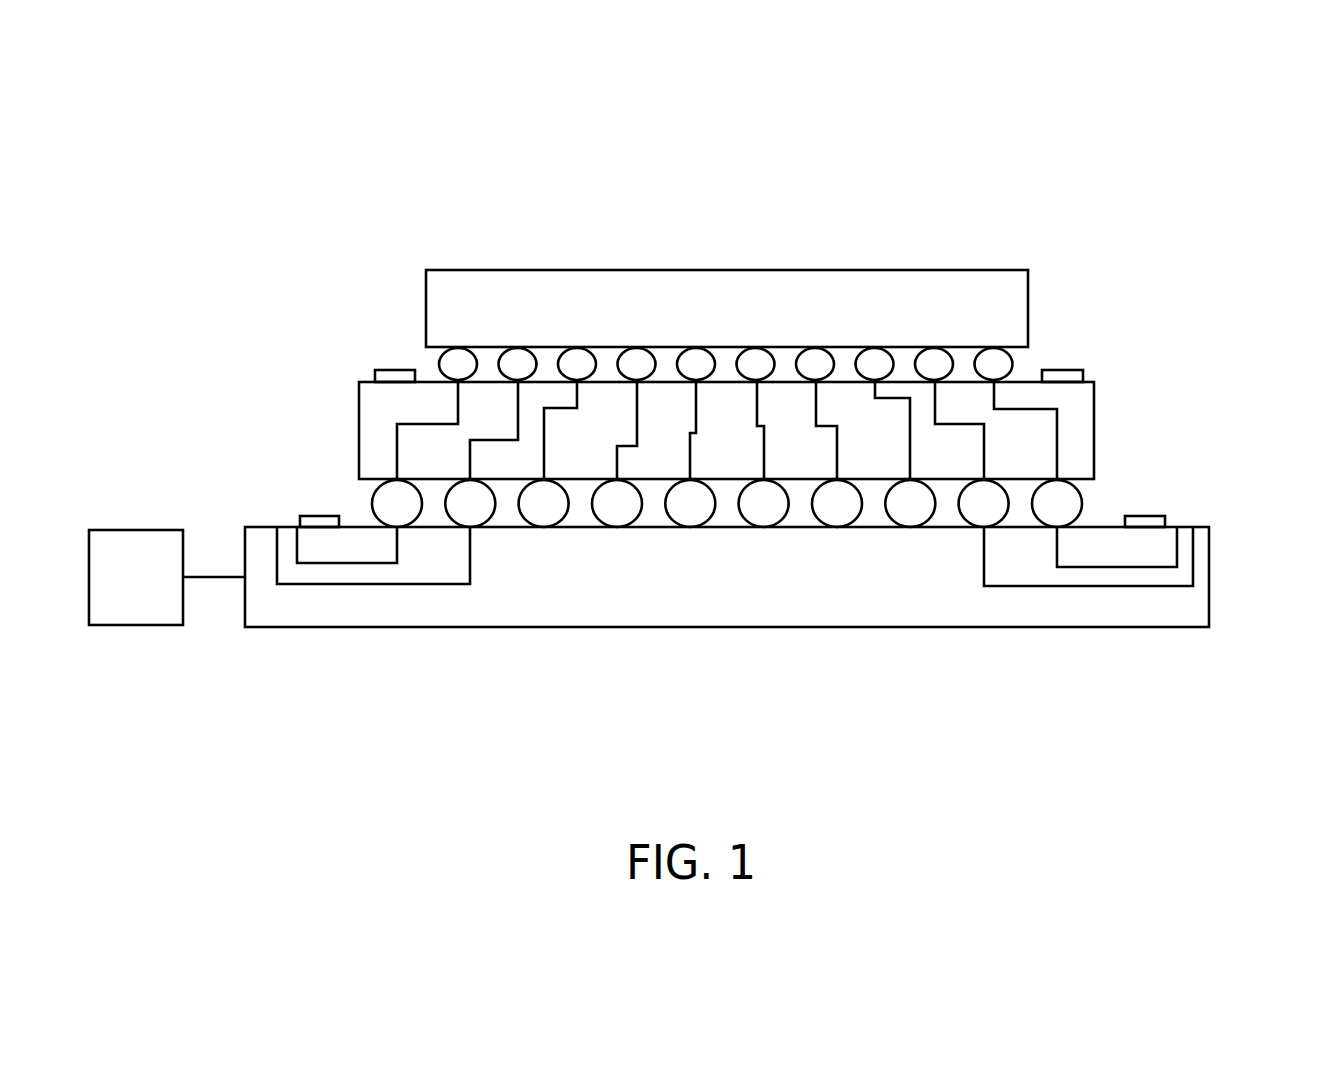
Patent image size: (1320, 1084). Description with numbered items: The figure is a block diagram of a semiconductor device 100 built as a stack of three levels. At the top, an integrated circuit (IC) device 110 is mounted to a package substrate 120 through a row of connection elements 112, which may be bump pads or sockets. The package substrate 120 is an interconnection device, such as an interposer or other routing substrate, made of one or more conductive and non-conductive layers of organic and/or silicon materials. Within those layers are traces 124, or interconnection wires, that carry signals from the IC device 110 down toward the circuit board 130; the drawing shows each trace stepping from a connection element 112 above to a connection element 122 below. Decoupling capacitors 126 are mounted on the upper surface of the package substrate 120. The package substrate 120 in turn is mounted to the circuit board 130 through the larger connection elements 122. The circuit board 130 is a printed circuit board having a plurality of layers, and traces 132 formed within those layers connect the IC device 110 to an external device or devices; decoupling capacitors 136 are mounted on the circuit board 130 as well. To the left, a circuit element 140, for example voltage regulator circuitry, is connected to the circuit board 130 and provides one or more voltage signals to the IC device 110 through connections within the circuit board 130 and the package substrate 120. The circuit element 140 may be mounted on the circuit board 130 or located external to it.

The semiconductor device 100 is at (243, 155).
The integrated circuit (IC) device 110 is at (1028, 308).
The connection elements 112 is at (432, 362).
The package substrate 120 is at (1094, 420).
The connection elements 122 is at (360, 506).
The traces 124 is at (377, 415).
The decoupling capacitors 126 is at (390, 372).
The circuit board 130 is at (1209, 567).
The traces 132 is at (365, 604).
The decoupling capacitors 136 is at (309, 520).
The circuit element 140 is at (167, 577).